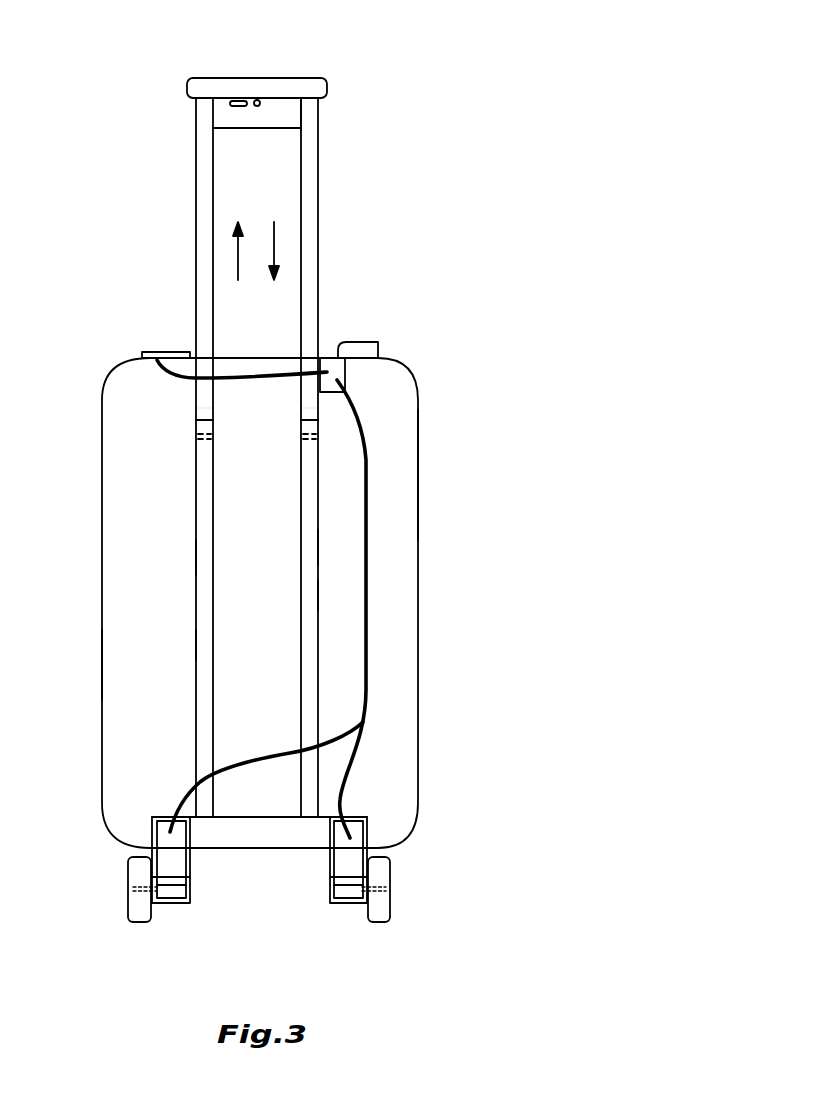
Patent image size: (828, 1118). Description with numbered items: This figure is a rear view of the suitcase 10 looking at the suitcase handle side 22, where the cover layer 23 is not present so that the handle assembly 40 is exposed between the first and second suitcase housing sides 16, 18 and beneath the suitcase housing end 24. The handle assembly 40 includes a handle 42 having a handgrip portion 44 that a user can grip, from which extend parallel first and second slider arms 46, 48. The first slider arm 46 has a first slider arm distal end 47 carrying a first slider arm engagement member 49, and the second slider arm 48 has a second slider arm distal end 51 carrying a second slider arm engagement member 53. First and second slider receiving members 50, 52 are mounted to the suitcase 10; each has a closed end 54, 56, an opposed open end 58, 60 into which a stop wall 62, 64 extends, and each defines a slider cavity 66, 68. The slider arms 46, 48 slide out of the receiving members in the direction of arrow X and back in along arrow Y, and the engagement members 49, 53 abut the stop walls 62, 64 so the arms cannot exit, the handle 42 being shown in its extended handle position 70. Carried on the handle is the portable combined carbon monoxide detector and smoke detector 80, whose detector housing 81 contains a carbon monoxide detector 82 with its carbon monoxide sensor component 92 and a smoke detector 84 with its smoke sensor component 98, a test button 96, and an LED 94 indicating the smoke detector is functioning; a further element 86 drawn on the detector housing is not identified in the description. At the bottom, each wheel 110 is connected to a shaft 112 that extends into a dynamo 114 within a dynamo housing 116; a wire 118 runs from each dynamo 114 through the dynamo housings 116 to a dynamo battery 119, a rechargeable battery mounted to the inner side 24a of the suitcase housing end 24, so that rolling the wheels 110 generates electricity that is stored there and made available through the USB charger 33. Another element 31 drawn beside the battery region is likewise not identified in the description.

The suitcase 10 is at (428, 338).
The first suitcase housing side 16 is at (420, 532).
The second suitcase housing side 18 is at (102, 665).
The suitcase handle side 22 is at (385, 463).
The cover layer 23 is at (383, 500).
The suitcase housing end 24 is at (235, 358).
The inner side of suitcase housing end 24a is at (267, 378).
The left top fitting 31 is at (152, 355).
The USB charger 33 is at (358, 345).
The dynamo battery 119 is at (340, 370).
The wire 118 is at (367, 700).
The handle assembly 40 is at (262, 457).
The first slider arm 46 is at (208, 278).
The second slider arm 48 is at (320, 278).
The extended handle position 70 is at (195, 211).
The handle 42 is at (198, 88).
The handgrip portion 44 is at (250, 85).
The smoke sensor component 98 is at (218, 118).
The carbon monoxide detector 82 is at (223, 110).
The portable combined carbon monoxide detector and smoke detector 80 is at (268, 128).
The detector housing 81 is at (270, 110).
The smoke detector 84 is at (288, 113).
The panel edge 86 is at (296, 122).
The carbon monoxide sensor component 92 is at (307, 110).
The test button 96 is at (238, 107).
The LED 94 is at (256, 108).
The stop wall 64 is at (197, 410).
The open end 60 is at (198, 420).
The second slider arm distal end 51 is at (199, 440).
The second slider arm engagement member 53 is at (203, 443).
The stop wall 62 is at (317, 419).
The open end 58 is at (316, 418).
The first slider arm distal end 47 is at (306, 440).
The first slider arm engagement member 49 is at (311, 444).
The second slider receiving member 52 is at (207, 557).
The slider cavity 68 is at (207, 644).
The first slider receiving member 50 is at (312, 545).
The slider cavity 66 is at (309, 590).
The closed end 56 is at (205, 822).
The closed end 54 is at (312, 822).
The dynamo housing 116 is at (168, 902).
The dynamo 114 is at (182, 865).
The shaft 112 is at (177, 882).
The wheel 110 is at (137, 870).